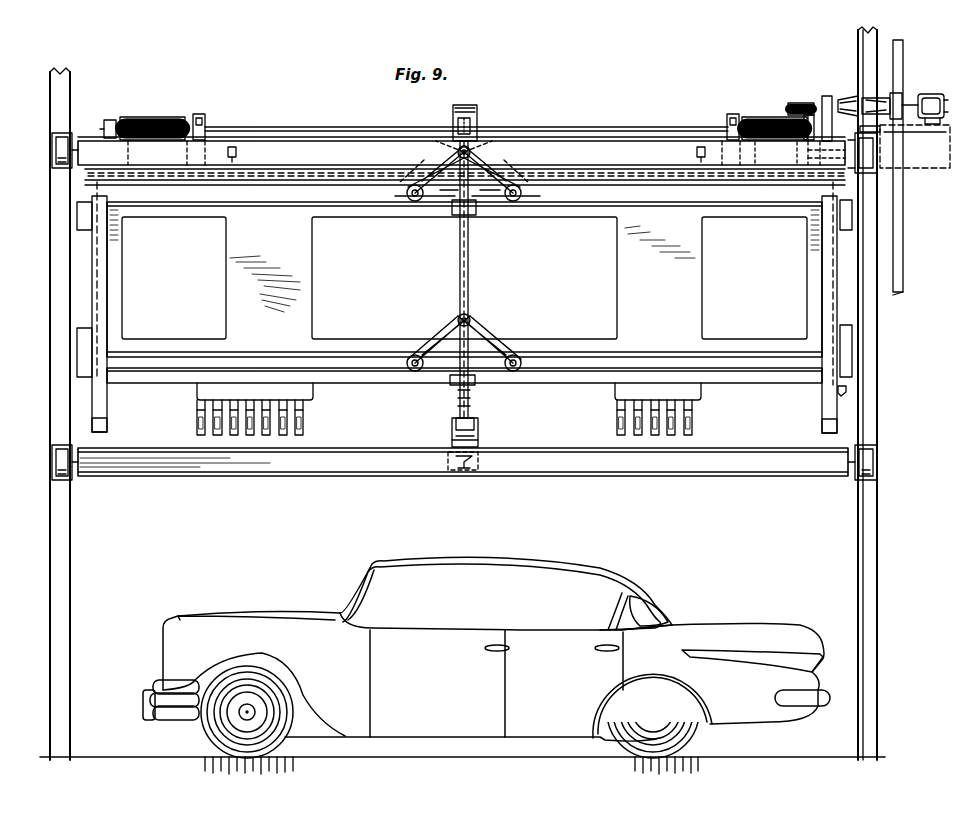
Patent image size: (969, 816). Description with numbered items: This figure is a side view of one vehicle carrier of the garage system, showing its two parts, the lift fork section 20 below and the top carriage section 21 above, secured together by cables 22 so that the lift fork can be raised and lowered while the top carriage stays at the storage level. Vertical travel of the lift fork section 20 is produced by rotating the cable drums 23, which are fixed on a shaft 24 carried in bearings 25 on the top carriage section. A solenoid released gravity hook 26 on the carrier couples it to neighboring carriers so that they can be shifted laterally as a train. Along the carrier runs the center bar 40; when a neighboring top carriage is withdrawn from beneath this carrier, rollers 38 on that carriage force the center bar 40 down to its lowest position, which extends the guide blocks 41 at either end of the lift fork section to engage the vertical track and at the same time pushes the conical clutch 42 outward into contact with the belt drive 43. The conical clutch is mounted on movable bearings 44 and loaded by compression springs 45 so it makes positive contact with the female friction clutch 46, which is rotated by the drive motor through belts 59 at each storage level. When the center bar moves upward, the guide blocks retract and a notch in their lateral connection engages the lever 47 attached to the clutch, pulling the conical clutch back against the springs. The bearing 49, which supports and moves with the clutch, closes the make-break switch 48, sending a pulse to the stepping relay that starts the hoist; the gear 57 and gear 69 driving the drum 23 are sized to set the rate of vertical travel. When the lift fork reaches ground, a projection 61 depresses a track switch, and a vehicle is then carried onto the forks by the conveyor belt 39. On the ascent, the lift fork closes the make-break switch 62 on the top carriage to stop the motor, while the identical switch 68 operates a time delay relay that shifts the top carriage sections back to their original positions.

The lift fork section 20 is at (350, 383).
The top carriage section 21 is at (461, 153).
The cables 22 is at (130, 153).
The cable drums 23 is at (153, 117).
The shaft 24 is at (350, 127).
The bearings 25 is at (200, 114).
The solenoid released gravity hooks 26 is at (458, 125).
The rollers 38 is at (477, 124).
The conveyor belt 39 is at (698, 767).
The center bar 40 is at (468, 283).
The guide blocks 41 is at (82, 334).
The conical clutch 42 is at (848, 100).
The belt drive 43 is at (900, 96).
The movable bearings 44 is at (783, 153).
The compression springs 45 is at (753, 153).
The female friction clutch 46 is at (808, 182).
The lever 47 is at (866, 173).
The switch 48 is at (878, 134).
The bearing 49 is at (827, 96).
The gear 57 is at (800, 103).
The belts 59 is at (903, 52).
The projection 61 is at (846, 392).
The make-break switch 62 is at (697, 152).
The make-break switch 68 is at (236, 152).
The gear 69 is at (810, 106).